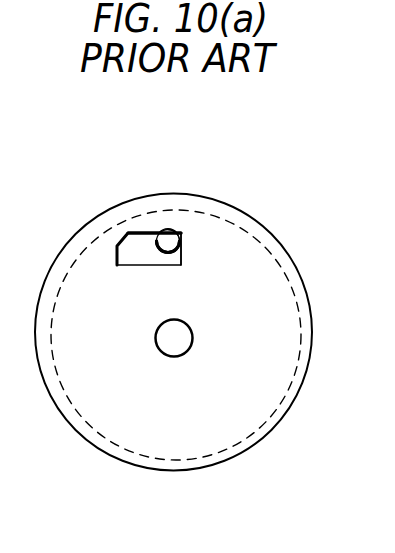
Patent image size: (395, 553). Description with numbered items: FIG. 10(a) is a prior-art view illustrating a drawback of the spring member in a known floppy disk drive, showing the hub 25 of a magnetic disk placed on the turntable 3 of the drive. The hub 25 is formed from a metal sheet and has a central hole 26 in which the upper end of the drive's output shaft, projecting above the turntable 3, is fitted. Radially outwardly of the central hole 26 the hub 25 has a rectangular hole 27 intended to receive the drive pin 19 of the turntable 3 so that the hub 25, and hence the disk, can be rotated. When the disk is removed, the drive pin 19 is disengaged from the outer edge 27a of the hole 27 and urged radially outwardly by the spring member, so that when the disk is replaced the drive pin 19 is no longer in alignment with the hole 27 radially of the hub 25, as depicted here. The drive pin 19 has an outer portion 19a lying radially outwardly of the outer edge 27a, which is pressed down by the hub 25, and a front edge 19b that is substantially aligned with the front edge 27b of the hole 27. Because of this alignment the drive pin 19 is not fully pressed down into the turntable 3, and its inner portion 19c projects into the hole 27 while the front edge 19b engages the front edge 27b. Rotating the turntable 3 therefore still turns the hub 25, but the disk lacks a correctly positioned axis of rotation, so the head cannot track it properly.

The turntable 3 is at (293, 268).
The hub 25 is at (263, 228).
The rectangular hole 27 is at (122, 245).
The outer edge 27a is at (147, 233).
The front edge 27b is at (181, 258).
The drive pin 19 is at (166, 232).
The outer portion 19a is at (168, 230).
The front edge 19b is at (181, 239).
The inner portion 19c is at (172, 252).
The central hole 26 is at (175, 349).